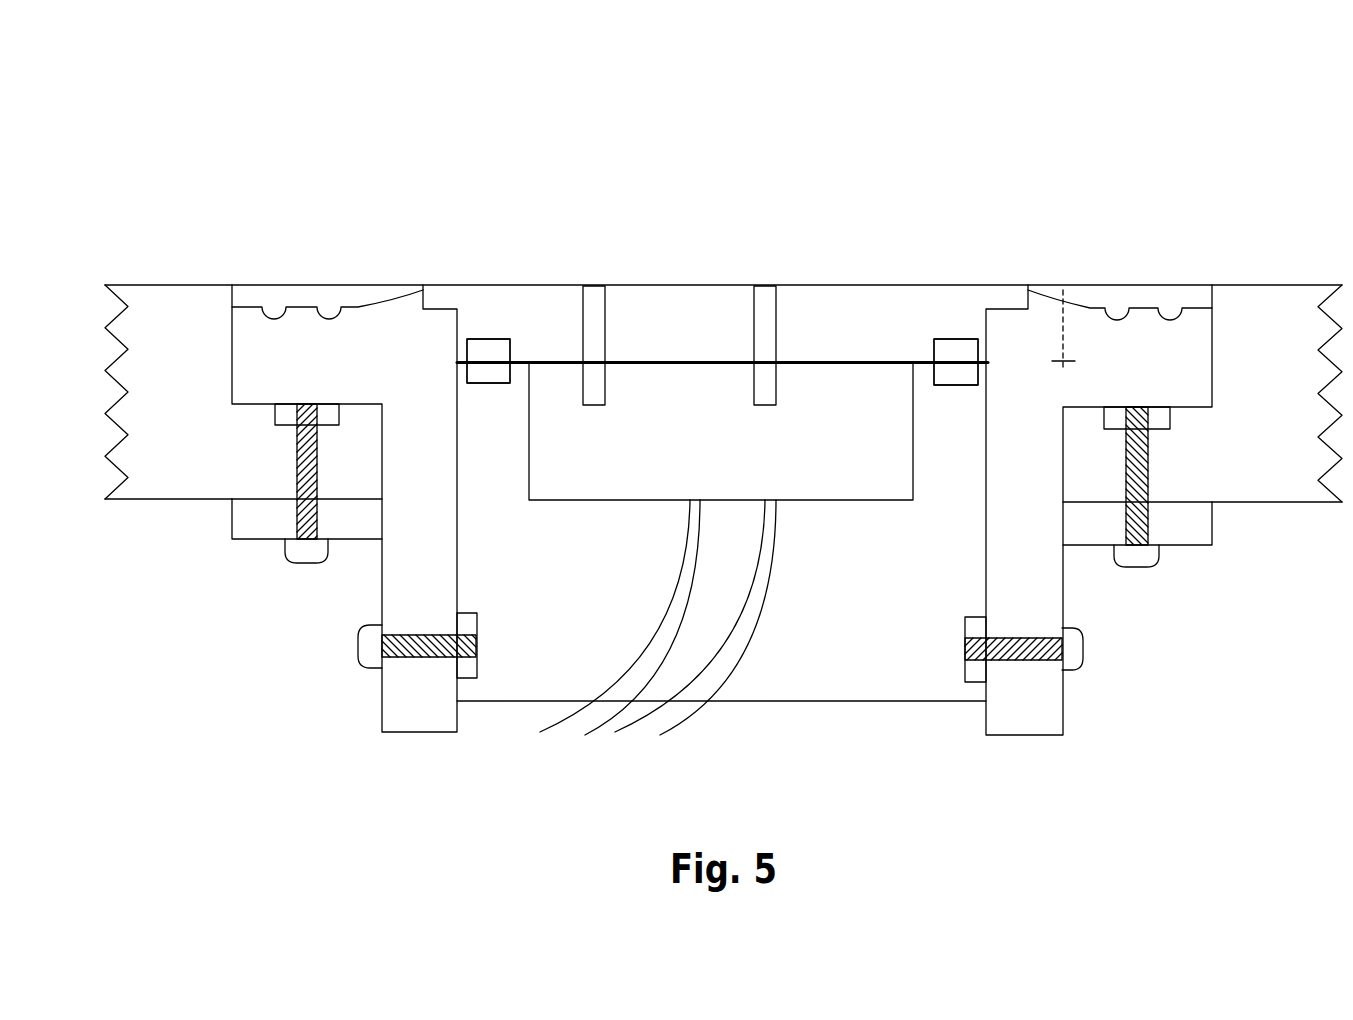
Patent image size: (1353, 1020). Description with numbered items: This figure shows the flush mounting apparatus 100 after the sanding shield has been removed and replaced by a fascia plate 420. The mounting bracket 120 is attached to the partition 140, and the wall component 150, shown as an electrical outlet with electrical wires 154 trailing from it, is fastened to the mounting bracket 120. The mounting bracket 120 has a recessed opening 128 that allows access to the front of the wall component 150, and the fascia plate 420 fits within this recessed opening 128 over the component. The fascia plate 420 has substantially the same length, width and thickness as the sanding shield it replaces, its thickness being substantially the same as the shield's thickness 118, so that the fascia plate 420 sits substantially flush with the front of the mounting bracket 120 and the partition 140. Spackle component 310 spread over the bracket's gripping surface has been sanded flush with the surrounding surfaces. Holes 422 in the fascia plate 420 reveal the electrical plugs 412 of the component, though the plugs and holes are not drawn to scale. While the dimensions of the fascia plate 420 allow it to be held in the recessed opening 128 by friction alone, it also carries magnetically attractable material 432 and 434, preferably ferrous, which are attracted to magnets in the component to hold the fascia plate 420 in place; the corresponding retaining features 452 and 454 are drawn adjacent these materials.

The flush mounting apparatus 100 is at (196, 135).
The partition 140 is at (199, 279).
The spackle component 310 is at (307, 286).
The mounting bracket 120 is at (377, 711).
The thickness 118 is at (722, 428).
The wall component 150 is at (888, 706).
The fascia plate 420 is at (947, 284).
The recessed opening 128 is at (1010, 195).
The electrical plugs 412 is at (593, 405).
The holes 422 is at (594, 286).
The magnetically attractable material 432 is at (488, 339).
The left fastener 452 is at (483, 383).
The magnetically attractable material 434 is at (960, 339).
The right fastener 454 is at (967, 385).
The electrical wires 154 is at (703, 707).